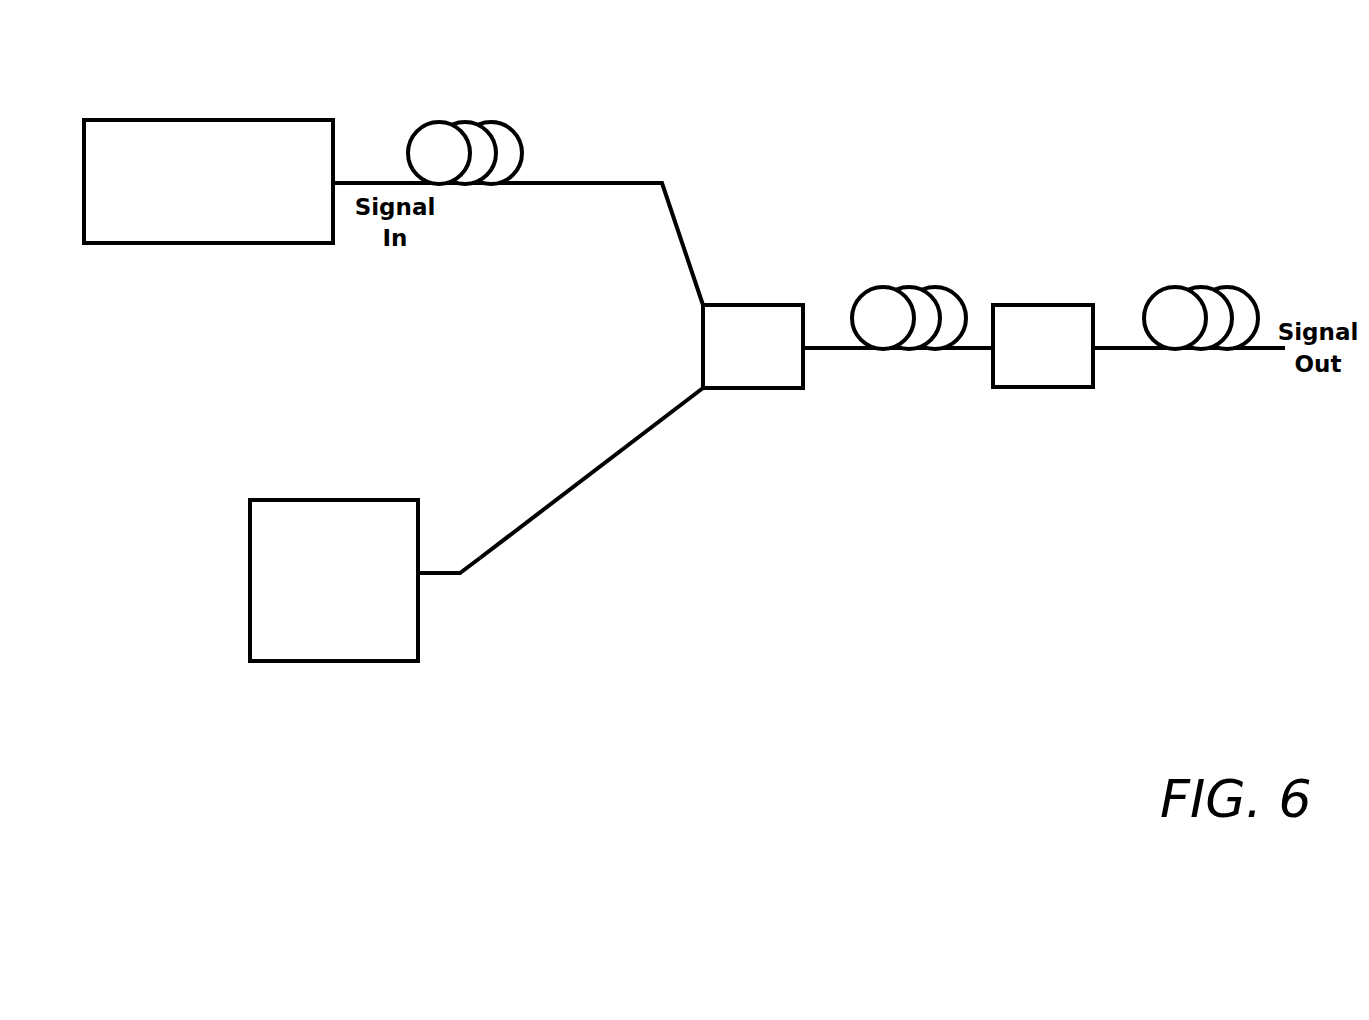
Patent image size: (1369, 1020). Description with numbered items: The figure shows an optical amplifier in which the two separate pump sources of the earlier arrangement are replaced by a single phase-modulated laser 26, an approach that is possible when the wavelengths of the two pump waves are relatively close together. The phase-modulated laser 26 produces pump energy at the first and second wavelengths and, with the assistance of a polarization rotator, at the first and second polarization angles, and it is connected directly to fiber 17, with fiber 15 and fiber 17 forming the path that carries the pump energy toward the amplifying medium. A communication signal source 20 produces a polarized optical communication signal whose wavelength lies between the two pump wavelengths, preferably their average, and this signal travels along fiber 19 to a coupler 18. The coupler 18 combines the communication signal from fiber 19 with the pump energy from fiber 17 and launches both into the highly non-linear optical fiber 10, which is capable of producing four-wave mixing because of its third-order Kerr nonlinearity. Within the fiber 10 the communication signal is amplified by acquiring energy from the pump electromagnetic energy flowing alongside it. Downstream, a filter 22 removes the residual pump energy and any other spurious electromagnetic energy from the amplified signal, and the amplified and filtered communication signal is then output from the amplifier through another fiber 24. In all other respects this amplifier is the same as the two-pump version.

The communication signal source 20 is at (214, 119).
The fiber 19 is at (620, 181).
The coupler 18 is at (745, 304).
The highly non-linear optical fiber 10 is at (975, 350).
The filter 22 is at (1050, 304).
The fiber 24 is at (1282, 350).
The phase-modulated laser 26 is at (249, 584).
The fiber 15 is at (474, 566).
The fiber 17 is at (603, 466).